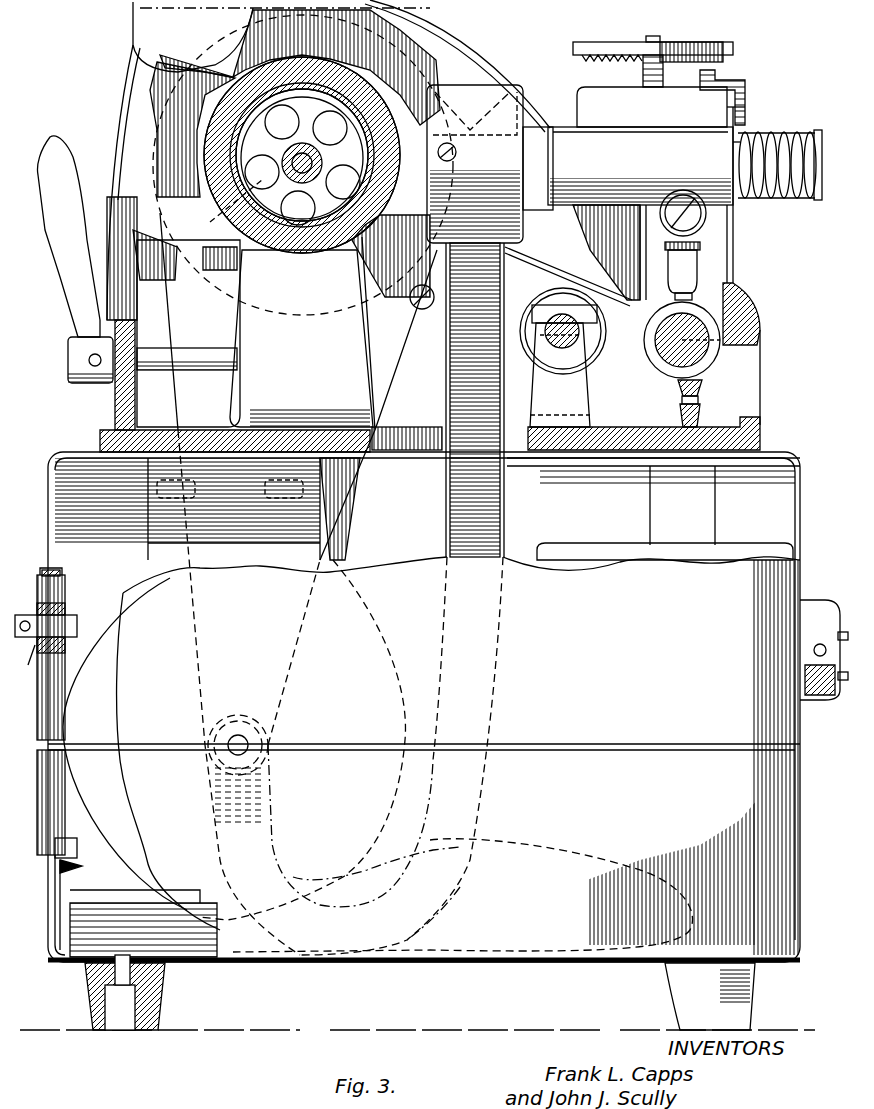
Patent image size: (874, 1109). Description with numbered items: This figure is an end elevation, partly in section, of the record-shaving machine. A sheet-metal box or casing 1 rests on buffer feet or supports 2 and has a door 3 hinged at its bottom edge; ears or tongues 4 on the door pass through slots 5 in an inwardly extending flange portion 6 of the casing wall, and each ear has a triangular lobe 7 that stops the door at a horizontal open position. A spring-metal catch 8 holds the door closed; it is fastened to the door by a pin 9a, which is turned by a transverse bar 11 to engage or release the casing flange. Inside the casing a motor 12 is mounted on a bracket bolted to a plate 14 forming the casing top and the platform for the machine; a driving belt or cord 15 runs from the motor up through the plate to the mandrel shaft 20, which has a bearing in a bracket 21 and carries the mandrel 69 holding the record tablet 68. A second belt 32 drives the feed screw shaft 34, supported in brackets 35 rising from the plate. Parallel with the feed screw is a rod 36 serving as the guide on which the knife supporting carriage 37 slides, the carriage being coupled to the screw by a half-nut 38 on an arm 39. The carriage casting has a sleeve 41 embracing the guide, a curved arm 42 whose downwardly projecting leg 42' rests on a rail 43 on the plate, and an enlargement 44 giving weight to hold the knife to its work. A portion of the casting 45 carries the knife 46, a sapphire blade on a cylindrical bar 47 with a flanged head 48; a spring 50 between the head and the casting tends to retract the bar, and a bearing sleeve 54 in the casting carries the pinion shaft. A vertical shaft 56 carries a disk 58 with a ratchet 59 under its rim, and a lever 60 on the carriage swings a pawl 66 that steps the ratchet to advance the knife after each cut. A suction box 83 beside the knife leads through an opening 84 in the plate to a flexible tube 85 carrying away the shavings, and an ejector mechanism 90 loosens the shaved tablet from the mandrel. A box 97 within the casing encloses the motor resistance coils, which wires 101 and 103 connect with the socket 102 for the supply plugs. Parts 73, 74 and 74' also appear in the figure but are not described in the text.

The box or casing 1 is at (793, 805).
The buffer feet or supports 2 is at (680, 975).
The door 3 is at (40, 705).
The ears or tongues 4 is at (50, 870).
The slots 5 is at (77, 848).
The inwardly extending flange portion 6 is at (63, 830).
The upturned triangularly shaped lobe 7 is at (82, 866).
The catch 8 is at (70, 592).
The pin 9a is at (42, 572).
The transverse bar 11 is at (24, 666).
The motor 12 is at (160, 990).
The plate 14 is at (612, 452).
The driving belt or cord 15 is at (398, 345).
The mandrel shaft 20 is at (372, 100).
The bracket 21 is at (240, 310).
The belt 32 is at (545, 266).
The feed screw shaft 34 is at (575, 360).
The brackets 35 is at (588, 415).
The rod 36 is at (700, 352).
The knife supporting carriage 37 is at (740, 255).
The half-nut 38 is at (578, 340).
The arm 39 is at (585, 298).
The sleeve 41 is at (715, 325).
The curved arm 42 is at (345, 157).
The downwardly projecting leg 42' is at (151, 182).
The rail 43 is at (118, 385).
The enlargement 44 is at (130, 32).
The casting 45 is at (725, 145).
The knife 46 is at (430, 138).
The bar 47 is at (765, 165).
The flanged head 48 is at (818, 200).
The spring 50 is at (775, 200).
The bearing sleeve 54 is at (683, 195).
The vertical shaft 56 is at (650, 80).
The disk 58 is at (692, 45).
The ratchet 59 is at (612, 62).
The lever 60 is at (723, 113).
The pawl 66 is at (700, 85).
The record tablet 68 is at (217, 195).
The mandrel 69 is at (185, 95).
The panel 73 is at (207, 509).
The pin 74 is at (707, 388).
The pin 74' is at (709, 411).
The suction box 83 is at (490, 95).
The opening 84 is at (418, 433).
The flexible tube 85 is at (448, 492).
The tablet ejector mechanism 90 is at (208, 372).
The box or casing 97 is at (548, 543).
The wire 101 is at (815, 655).
The socket 102 is at (810, 690).
The wire 103 is at (838, 636).